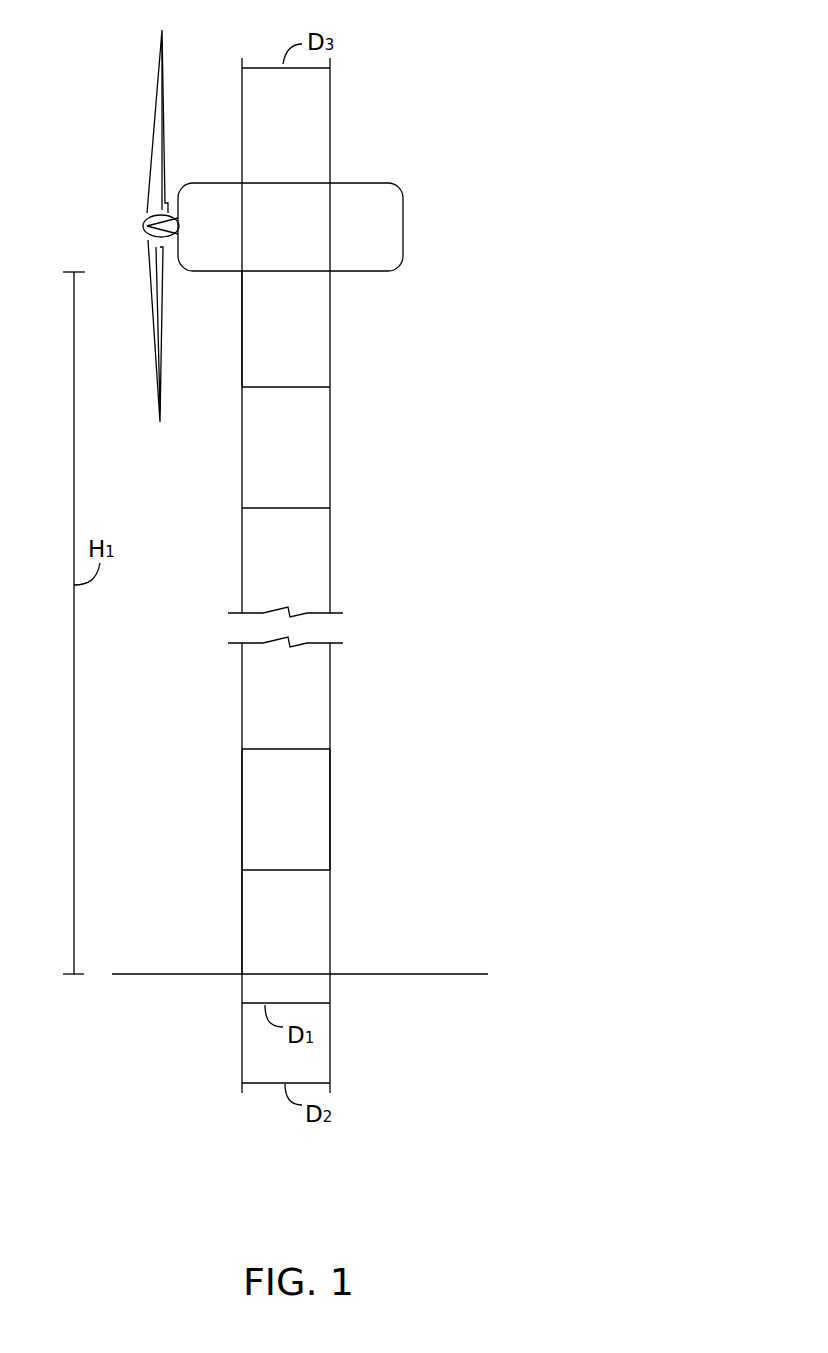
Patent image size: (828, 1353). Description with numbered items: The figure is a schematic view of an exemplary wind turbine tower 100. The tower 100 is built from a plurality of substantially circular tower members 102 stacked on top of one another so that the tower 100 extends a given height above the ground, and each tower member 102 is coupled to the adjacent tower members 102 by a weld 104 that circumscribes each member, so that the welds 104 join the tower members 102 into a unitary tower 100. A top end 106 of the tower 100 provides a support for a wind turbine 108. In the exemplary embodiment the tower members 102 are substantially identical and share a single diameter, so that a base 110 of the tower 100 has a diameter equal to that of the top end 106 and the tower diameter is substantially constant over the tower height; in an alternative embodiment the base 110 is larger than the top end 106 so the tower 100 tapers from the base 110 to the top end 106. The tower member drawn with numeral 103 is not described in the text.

The wind turbine tower 100 is at (615, 392).
The tower member 102 is at (290, 332).
The tower section 103 is at (290, 830).
The weld 104 is at (290, 508).
The top end 106 is at (412, 272).
The wind turbine 108 is at (351, 205).
The base 110 is at (507, 985).